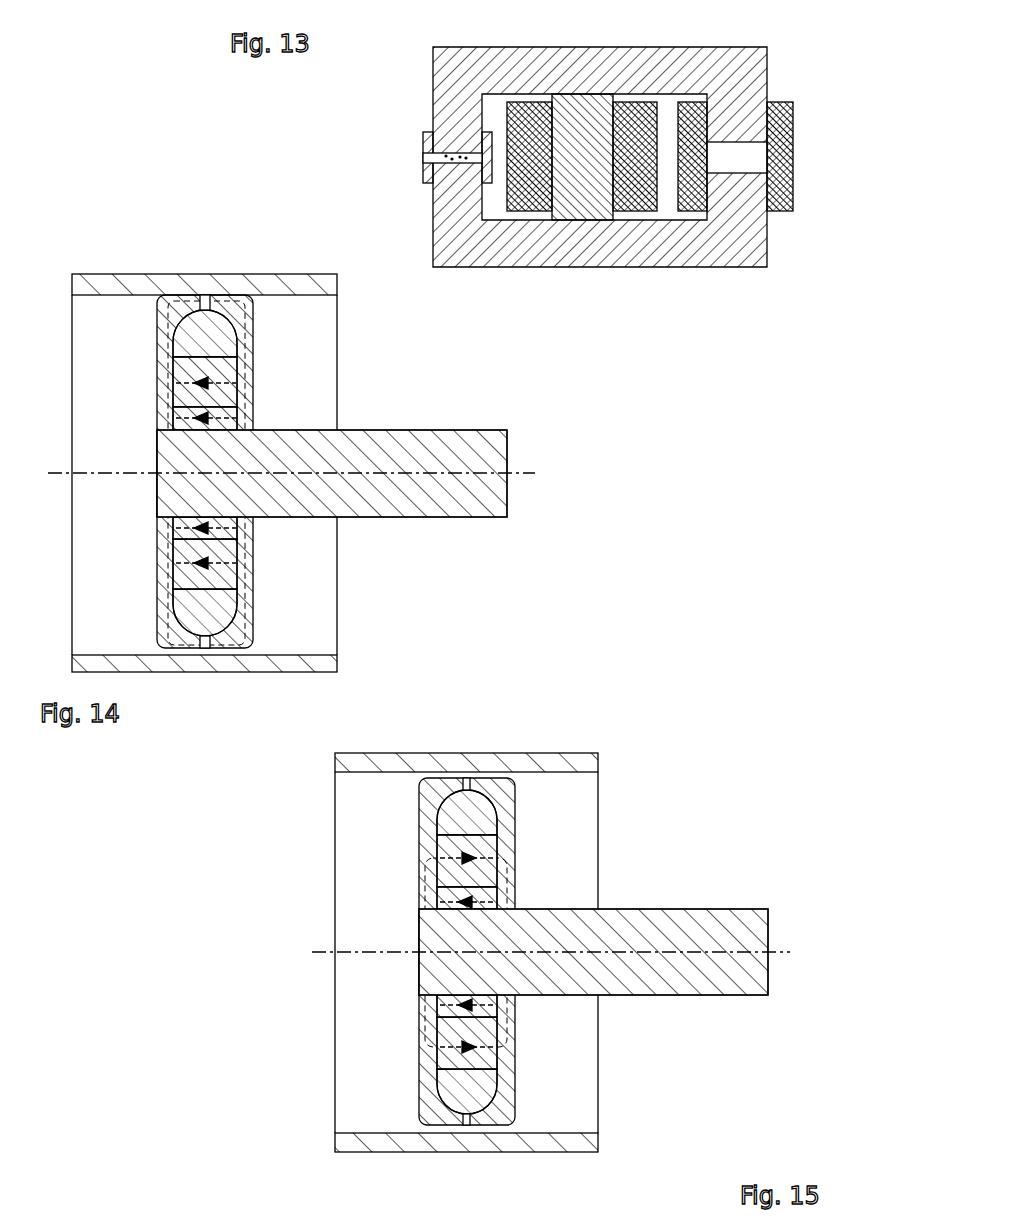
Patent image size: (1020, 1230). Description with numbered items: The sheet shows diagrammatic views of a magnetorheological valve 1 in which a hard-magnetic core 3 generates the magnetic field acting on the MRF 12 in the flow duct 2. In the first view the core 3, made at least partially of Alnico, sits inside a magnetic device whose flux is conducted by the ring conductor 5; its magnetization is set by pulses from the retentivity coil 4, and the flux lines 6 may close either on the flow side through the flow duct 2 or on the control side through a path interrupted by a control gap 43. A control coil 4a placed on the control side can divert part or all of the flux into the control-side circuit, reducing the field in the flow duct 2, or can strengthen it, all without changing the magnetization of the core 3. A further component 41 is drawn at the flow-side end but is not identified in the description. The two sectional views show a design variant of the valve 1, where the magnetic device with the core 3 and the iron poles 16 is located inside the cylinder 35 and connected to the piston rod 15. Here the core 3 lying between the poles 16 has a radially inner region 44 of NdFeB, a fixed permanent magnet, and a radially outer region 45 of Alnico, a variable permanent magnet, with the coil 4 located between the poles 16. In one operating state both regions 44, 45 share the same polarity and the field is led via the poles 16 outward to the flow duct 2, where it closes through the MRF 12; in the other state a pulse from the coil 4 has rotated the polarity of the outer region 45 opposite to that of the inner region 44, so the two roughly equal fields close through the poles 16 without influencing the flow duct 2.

In FIG. 14, the valve 1 is at (112, 260).
In FIG. 15, the valve 1 is at (632, 733).
In FIG. 13, the flow duct 2 is at (440, 158).
In FIG. 14, the flow duct 2 is at (160, 651).
In FIG. 15, the flow duct 2 is at (508, 773).
In FIG. 13, the core 3 is at (565, 105).
In FIG. 13, the retentivity coil 4 is at (520, 110).
In FIG. 14, the retentivity coil 4 is at (255, 328).
In FIG. 13, the control coil 4a is at (690, 105).
In FIG. 13, the ring conductor 5 is at (590, 60).
In FIG. 14, the flux lines 6 is at (160, 395).
In FIG. 13, the MRF 12 is at (432, 165).
In FIG. 14, the piston rod 15 is at (417, 445).
In FIG. 15, the piston rod 15 is at (683, 928).
In FIG. 14, the poles 16 is at (160, 318).
In FIG. 15, the poles 16 is at (487, 820).
In FIG. 15, the cylinder 35 is at (343, 1140).
In FIG. 13, the cover 41 is at (432, 135).
In FIG. 13, the control gap 43 is at (735, 152).
In FIG. 14, the radially inner region 44 is at (253, 423).
In FIG. 15, the radially inner region 44 is at (492, 898).
In FIG. 14, the radially outer region 45 is at (253, 370).
In FIG. 15, the radially outer region 45 is at (477, 848).